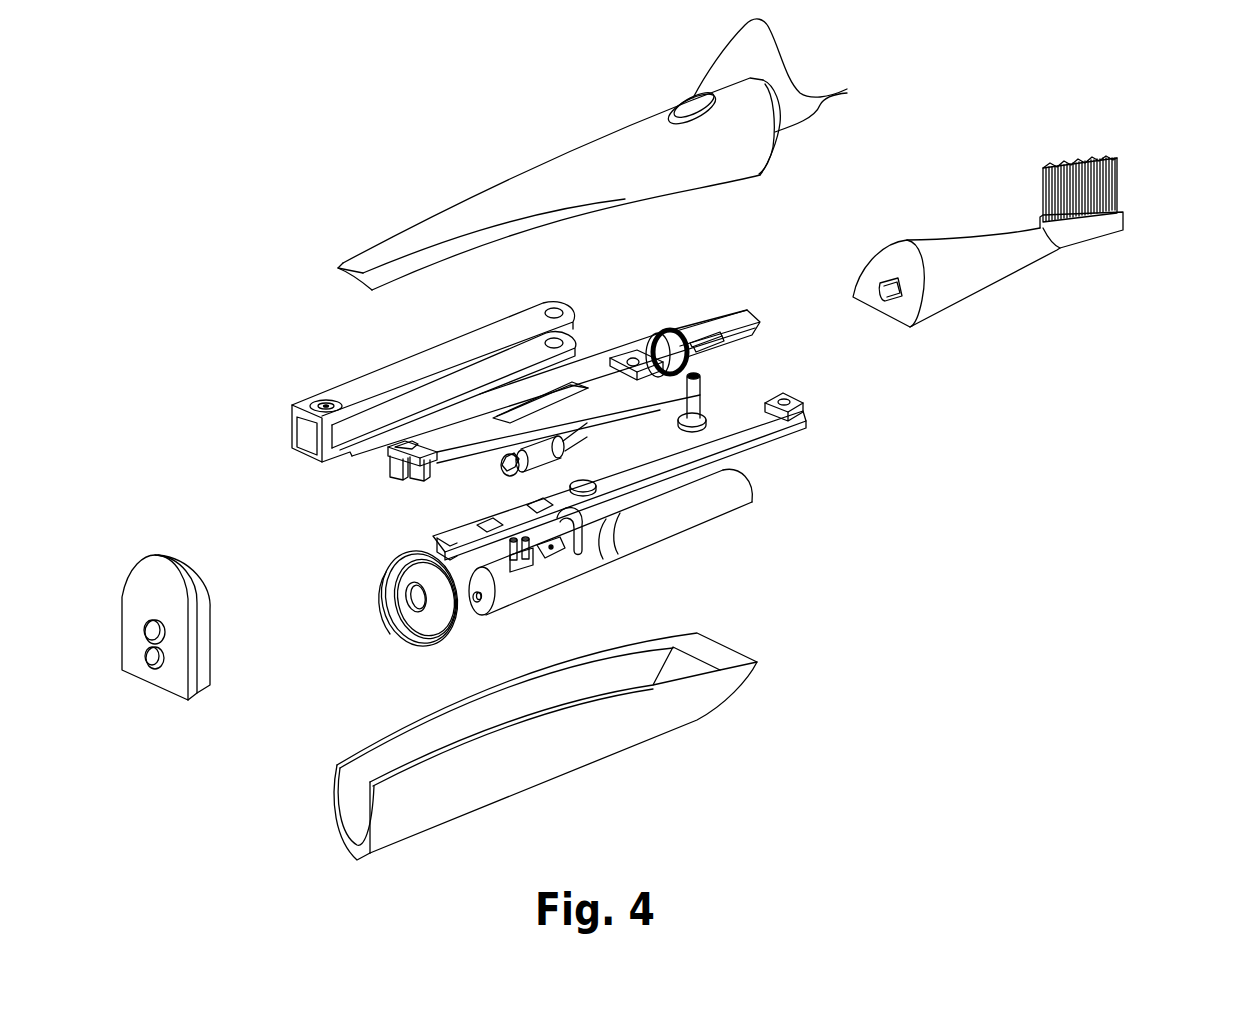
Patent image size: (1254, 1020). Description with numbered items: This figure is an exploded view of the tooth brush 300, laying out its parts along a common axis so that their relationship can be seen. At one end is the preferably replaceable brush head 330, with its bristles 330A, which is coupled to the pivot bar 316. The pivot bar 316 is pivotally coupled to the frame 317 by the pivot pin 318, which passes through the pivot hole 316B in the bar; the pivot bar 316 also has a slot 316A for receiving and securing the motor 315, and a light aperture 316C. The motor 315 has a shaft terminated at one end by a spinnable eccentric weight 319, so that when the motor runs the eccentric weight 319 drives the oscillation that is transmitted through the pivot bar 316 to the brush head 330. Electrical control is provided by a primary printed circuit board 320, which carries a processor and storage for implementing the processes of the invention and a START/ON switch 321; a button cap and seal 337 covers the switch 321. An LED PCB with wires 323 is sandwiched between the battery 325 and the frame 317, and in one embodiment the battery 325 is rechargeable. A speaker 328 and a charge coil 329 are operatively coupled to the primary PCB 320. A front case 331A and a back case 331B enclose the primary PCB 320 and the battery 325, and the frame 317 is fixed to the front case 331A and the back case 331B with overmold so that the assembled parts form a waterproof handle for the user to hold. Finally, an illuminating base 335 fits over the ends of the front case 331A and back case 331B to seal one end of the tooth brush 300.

The tooth brush 300 is at (1066, 51).
The motor 315 is at (527, 455).
The pivot bar 316 is at (388, 473).
The slot 316A is at (553, 392).
The pivot hole 316B is at (693, 337).
The light aperture 316C is at (413, 445).
The frame 317 is at (488, 338).
The pivot pin 318 is at (710, 396).
The eccentric weight 319 is at (500, 455).
The primary printed circuit board 320 is at (745, 430).
The START/ON switch 321 is at (790, 395).
The LED PCB with wires 323 is at (552, 563).
The battery 325 is at (700, 515).
The speaker 328 is at (403, 600).
The charge coil 329 is at (420, 644).
The brush head 330 is at (937, 262).
The bristles 330A is at (1073, 163).
The front case 331A is at (430, 228).
The back case 331B is at (617, 743).
The illuminating base 335 is at (143, 578).
The button cap and seal 337 is at (790, 75).